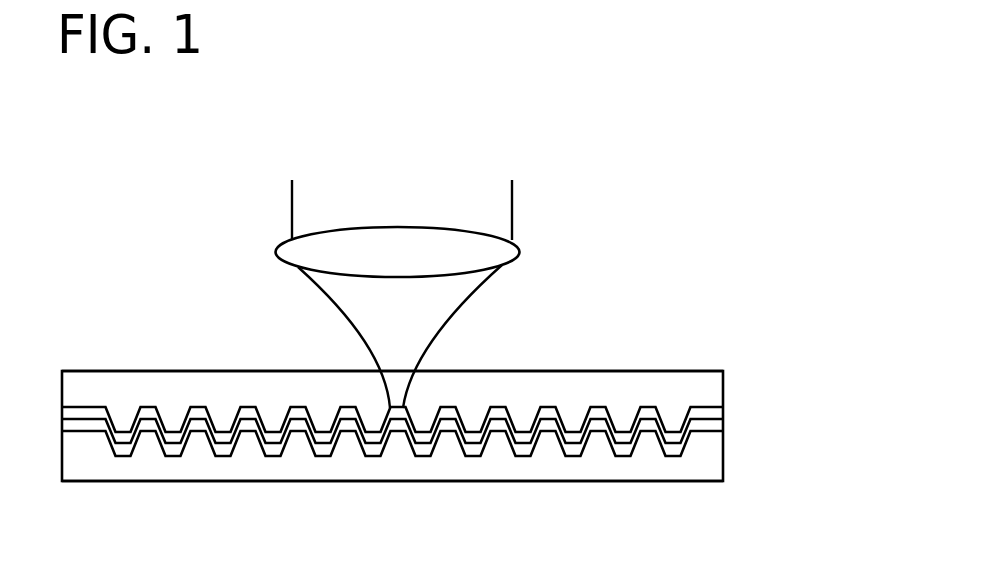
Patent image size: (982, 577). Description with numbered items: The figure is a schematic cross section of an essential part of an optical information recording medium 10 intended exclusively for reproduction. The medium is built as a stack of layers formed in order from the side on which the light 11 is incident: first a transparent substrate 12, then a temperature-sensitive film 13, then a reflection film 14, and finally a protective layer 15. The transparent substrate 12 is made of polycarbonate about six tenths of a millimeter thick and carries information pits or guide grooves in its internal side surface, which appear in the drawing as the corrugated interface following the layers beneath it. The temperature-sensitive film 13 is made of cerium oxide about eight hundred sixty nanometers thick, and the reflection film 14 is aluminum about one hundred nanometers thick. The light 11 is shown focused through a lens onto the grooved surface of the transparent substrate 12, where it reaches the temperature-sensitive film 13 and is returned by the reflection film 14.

The optical information recording medium 10 is at (707, 285).
The light 11 is at (433, 332).
The transparent substrate 12 is at (700, 389).
The temperature-sensitive film 13 is at (708, 415).
The reflection film 14 is at (715, 427).
The protective layer 15 is at (698, 485).